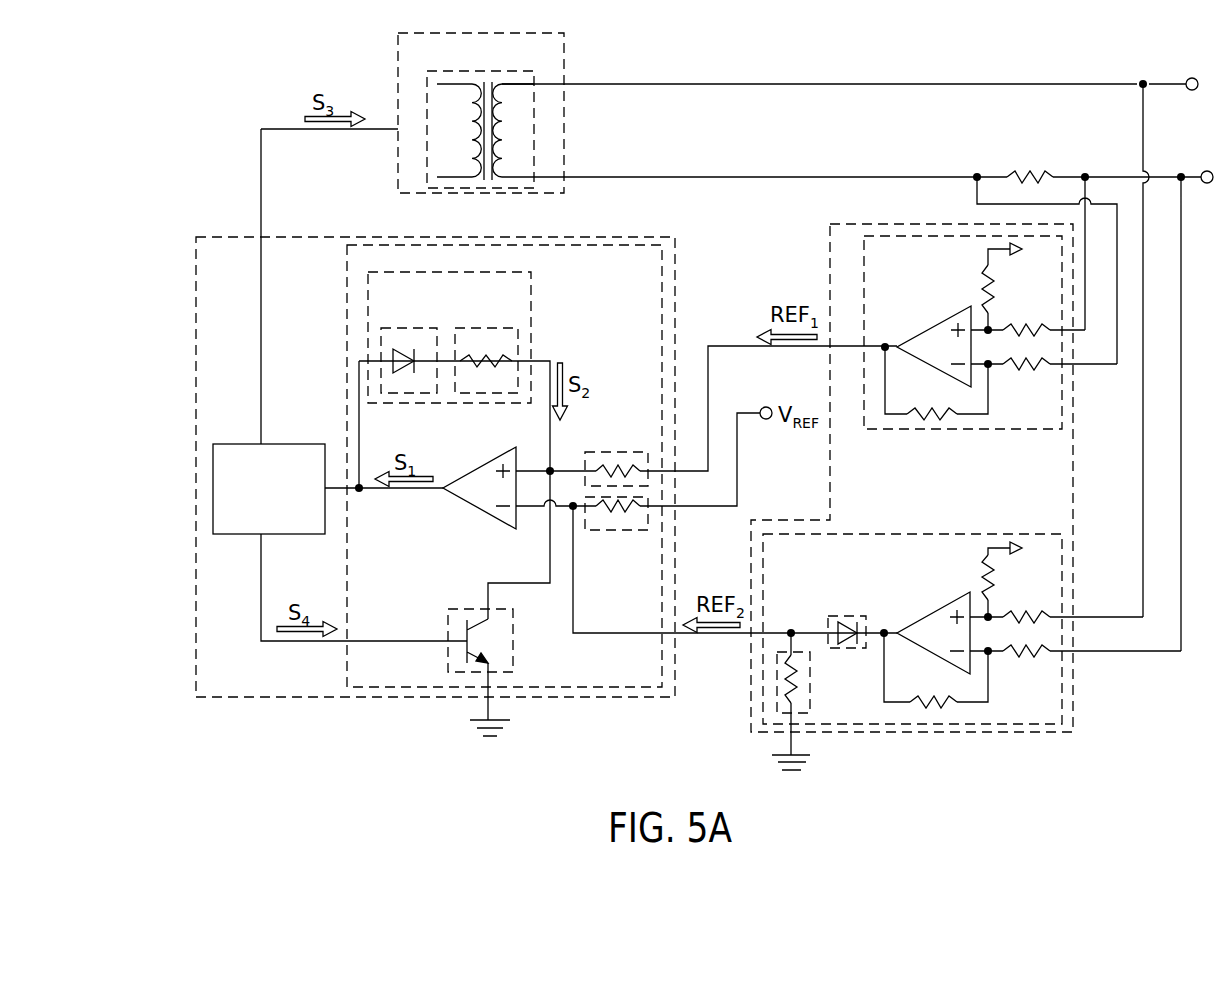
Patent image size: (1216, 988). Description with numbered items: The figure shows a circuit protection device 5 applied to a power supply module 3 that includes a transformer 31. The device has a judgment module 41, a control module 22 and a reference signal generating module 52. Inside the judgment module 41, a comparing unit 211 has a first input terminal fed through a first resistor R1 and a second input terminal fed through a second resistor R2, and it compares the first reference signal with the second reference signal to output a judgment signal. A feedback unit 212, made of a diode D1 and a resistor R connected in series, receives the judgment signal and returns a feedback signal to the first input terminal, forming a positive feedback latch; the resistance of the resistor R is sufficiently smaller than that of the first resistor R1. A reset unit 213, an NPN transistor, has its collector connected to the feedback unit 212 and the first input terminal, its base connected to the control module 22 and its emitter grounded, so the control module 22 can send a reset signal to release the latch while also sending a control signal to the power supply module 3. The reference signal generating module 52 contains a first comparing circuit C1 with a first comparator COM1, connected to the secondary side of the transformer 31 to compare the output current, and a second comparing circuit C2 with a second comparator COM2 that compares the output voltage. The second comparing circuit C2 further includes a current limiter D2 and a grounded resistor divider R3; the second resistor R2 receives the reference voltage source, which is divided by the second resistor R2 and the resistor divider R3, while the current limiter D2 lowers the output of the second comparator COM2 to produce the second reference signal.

The power supply module 3 is at (564, 55).
The transformer 31 is at (478, 71).
The circuit protection device 5 is at (215, 237).
The reference signal generating module 52 is at (828, 268).
The control module 22 is at (283, 444).
The judgment module 41 is at (345, 352).
The feedback unit 212 is at (531, 283).
The comparing unit 211 is at (478, 468).
The reset unit 213 is at (470, 608).
The diode D1 is at (392, 328).
The resistor R is at (475, 328).
The first resistor R1 is at (600, 452).
The second resistor R2 is at (592, 530).
The resistor divider R3 is at (810, 690).
The current limiter D2 is at (836, 616).
The first comparator COM1 is at (938, 326).
The second comparator COM2 is at (936, 614).
The first comparing circuit C1 is at (1000, 429).
The second comparing circuit C2 is at (913, 534).